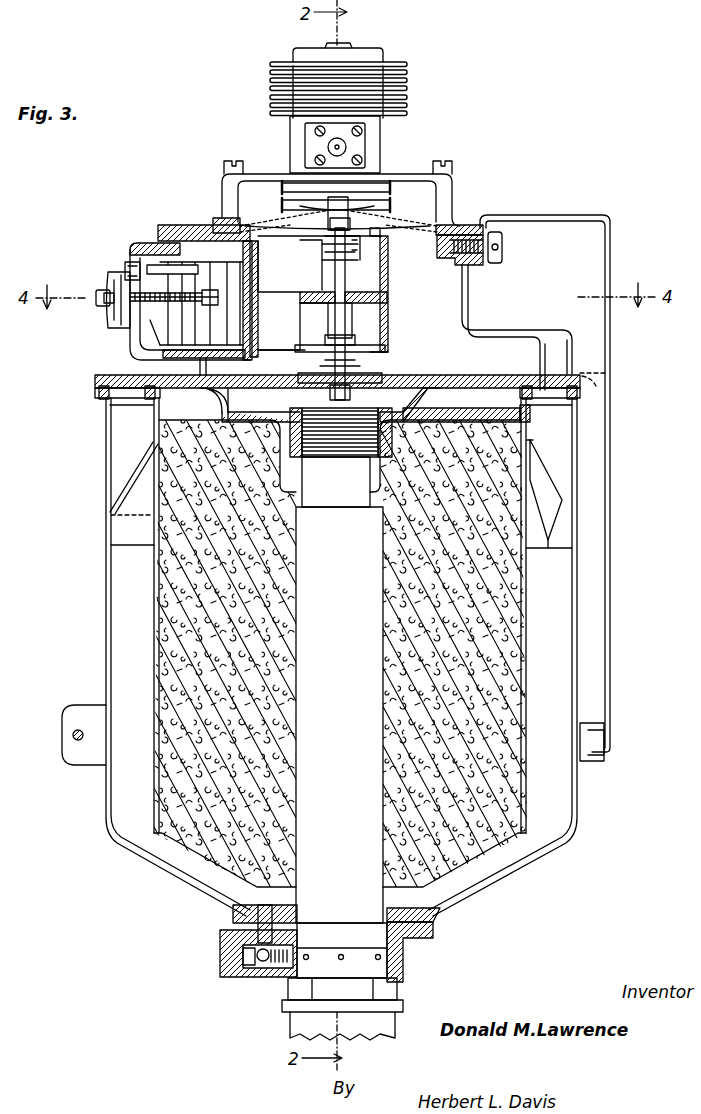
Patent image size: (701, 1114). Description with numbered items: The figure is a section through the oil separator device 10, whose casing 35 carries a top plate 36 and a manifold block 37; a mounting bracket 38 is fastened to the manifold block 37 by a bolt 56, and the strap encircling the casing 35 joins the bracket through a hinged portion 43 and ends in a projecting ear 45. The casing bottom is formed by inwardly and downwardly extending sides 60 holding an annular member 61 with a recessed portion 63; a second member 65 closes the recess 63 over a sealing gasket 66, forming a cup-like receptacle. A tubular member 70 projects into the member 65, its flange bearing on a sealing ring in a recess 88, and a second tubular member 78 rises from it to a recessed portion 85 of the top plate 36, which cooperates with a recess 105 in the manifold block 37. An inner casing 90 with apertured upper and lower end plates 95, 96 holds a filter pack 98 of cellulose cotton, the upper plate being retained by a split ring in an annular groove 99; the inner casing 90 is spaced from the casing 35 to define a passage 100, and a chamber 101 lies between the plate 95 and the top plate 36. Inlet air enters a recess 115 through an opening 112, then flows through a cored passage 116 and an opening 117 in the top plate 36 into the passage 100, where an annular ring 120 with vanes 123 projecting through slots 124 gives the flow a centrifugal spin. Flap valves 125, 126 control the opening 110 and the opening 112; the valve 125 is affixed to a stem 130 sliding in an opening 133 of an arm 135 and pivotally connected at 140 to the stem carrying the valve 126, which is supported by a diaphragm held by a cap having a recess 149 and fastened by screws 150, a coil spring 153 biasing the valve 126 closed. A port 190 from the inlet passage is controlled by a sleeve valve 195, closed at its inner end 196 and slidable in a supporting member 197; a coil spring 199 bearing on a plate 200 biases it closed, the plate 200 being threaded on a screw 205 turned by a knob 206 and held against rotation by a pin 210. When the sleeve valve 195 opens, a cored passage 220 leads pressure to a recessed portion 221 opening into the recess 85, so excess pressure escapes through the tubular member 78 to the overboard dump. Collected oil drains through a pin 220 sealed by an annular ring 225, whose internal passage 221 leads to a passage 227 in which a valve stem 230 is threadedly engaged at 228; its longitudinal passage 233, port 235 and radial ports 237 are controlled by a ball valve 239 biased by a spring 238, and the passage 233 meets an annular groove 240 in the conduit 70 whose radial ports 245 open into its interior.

The device 10 is at (83, 498).
The casing 35 is at (106, 614).
The top plate 36 is at (96, 382).
The manifold block 37 is at (210, 226).
The mounting bracket 38 is at (611, 490).
The hinged portion 43 is at (596, 762).
The projecting ear 45 is at (70, 762).
The bolt 56 is at (503, 246).
The inwardly and downwardly extending sides 60 is at (178, 868).
The annular member 61 is at (438, 928).
The annular recessed portion 63 is at (440, 912).
The second member 65 is at (408, 958).
The sealing gasket 66 is at (428, 932).
The tubular member 70 is at (392, 1010).
The second tubular member 78 is at (339, 690).
The recessed portion 85 is at (248, 372).
The recess 88 is at (388, 988).
The second casing 90 is at (521, 640).
The upper end plate 95 is at (433, 458).
The lower end plate 96 is at (448, 642).
The filter pack 98 is at (225, 642).
The annular groove 99 is at (118, 437).
The passage 100 is at (341, 541).
The chamber 101 is at (466, 408).
The recess 105 is at (320, 320).
The opening 110 is at (333, 300).
The second opening 112 is at (285, 268).
The recess 115 is at (399, 240).
The cored passage 116 is at (425, 294).
The opening 117 is at (560, 400).
The annular ring 120 is at (132, 467).
The radial vane 123 is at (490, 540).
The slot 124 is at (560, 500).
The flap valve member 125 is at (340, 392).
The flap valve member 126 is at (349, 255).
The stem 130 is at (347, 320).
The opening 133 is at (300, 304).
The arm 135 is at (355, 294).
The pivotal connection 140 is at (318, 246).
The recess 149 is at (437, 211).
The screws 150 is at (232, 164).
The coil spring 153 is at (305, 206).
The valve port 190 is at (275, 326).
The sleeve valve 195 is at (170, 243).
The closed inner end 196 is at (318, 240).
The supporting member 197 is at (150, 262).
The coil spring 199 is at (168, 310).
The plate 200 is at (125, 300).
The screw 205 is at (110, 283).
The knob 206 is at (100, 292).
The pin 210 is at (150, 268).
The cored passage 220 is at (200, 366).
The recessed portion 221 is at (208, 930).
The annular sealing ring 225 is at (230, 946).
The passage 227 is at (258, 978).
The screw threaded engagement 228 is at (275, 963).
The valve stem 230 is at (262, 962).
The passage 233 is at (280, 978).
The port 235 is at (243, 958).
The radially extending ports 237 is at (262, 976).
The spring 238 is at (290, 978).
The ball valve 239 is at (270, 976).
The annular groove 240 is at (352, 945).
The radially extending ports 245 is at (341, 960).